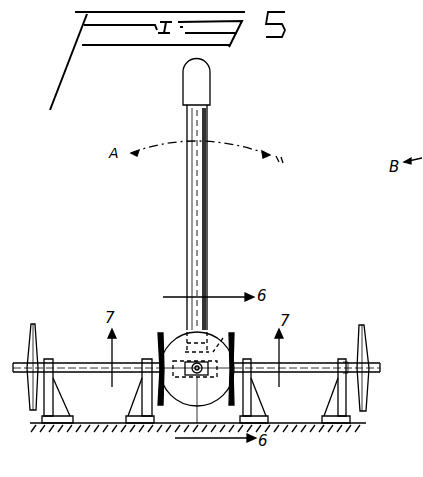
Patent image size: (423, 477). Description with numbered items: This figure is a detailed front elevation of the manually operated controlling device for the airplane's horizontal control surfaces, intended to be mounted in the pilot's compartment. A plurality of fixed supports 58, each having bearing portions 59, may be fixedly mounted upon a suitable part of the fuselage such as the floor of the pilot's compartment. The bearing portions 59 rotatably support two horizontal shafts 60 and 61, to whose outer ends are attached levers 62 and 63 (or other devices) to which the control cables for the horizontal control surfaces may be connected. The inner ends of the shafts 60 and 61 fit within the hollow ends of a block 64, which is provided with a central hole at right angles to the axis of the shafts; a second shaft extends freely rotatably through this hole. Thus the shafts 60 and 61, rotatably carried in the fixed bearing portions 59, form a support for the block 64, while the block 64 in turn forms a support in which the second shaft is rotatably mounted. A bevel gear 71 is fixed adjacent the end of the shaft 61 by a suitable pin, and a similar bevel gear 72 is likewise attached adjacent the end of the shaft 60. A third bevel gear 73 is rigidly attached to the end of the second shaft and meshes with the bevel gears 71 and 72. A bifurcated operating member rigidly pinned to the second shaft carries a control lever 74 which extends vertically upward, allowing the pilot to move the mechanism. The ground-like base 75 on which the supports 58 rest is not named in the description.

The fixed supports 58 is at (128, 412).
The bearing portions 59 is at (343, 360).
The shaft 60 is at (70, 363).
The shaft 61 is at (295, 363).
The lever 62 is at (33, 323).
The lever 63 is at (367, 332).
The block 64 is at (225, 332).
The bevel gear 71 is at (236, 333).
The bevel gear 72 is at (160, 333).
The third bevel gear 73 is at (183, 393).
The control lever 74 is at (208, 206).
The base 75 is at (226, 436).